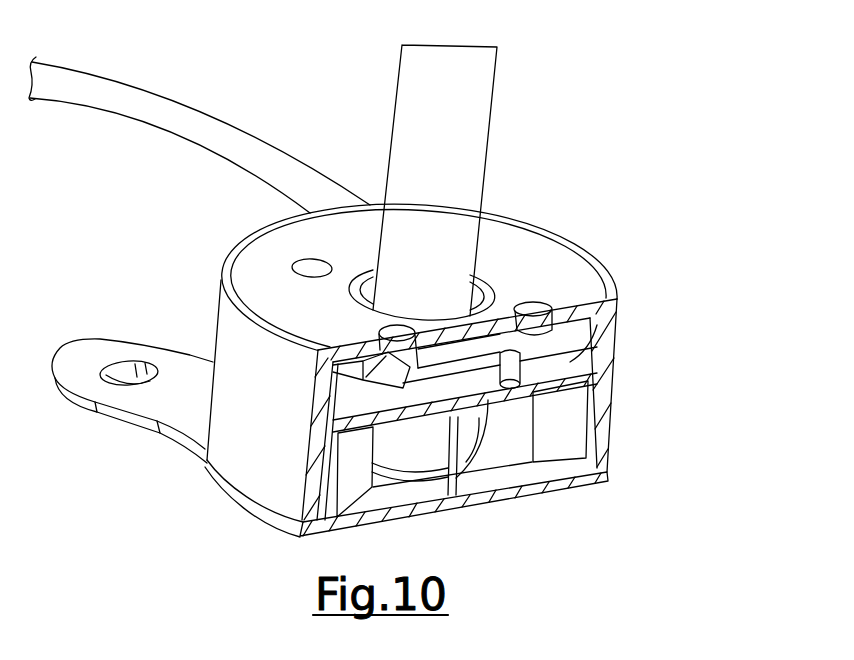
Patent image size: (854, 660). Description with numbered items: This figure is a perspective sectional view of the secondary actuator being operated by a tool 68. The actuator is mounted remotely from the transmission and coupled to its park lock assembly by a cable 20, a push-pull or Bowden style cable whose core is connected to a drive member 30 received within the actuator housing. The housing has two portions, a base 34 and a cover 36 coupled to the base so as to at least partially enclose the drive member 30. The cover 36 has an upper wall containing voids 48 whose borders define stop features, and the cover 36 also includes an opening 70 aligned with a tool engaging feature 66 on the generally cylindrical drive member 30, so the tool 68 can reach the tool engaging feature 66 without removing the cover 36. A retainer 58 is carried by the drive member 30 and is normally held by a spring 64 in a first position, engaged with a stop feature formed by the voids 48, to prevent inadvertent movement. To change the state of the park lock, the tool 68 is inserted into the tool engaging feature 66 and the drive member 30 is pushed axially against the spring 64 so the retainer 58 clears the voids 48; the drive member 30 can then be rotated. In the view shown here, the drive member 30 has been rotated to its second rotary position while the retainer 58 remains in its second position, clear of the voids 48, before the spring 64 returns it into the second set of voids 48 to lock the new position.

The cable 20 is at (188, 110).
The drive member 30 is at (570, 358).
The base 34 is at (584, 473).
The cover 36 is at (607, 415).
The voids 48 is at (314, 270).
The retainer 58 is at (535, 369).
The spring 64 is at (480, 453).
The tool engaging feature 66 is at (436, 376).
The tool 68 is at (473, 123).
The opening 70 is at (480, 298).